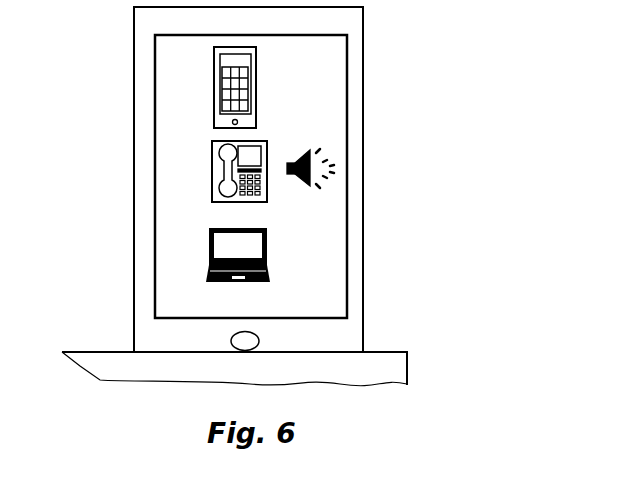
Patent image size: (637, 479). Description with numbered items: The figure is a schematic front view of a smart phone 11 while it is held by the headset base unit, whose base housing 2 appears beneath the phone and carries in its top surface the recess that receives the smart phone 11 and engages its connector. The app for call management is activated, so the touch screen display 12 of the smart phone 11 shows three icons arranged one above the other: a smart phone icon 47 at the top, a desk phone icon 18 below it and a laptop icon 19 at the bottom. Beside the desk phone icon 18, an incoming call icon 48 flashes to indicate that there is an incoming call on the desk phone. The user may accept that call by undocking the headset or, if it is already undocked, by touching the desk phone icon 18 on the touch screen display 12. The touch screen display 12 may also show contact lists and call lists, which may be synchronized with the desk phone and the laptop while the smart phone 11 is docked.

The base housing 2 is at (395, 368).
The smart phone 11 is at (357, 228).
The touch screen display 12 is at (330, 100).
The desk phone icon 18 is at (212, 143).
The laptop icon 19 is at (238, 254).
The smart phone icon 47 is at (214, 57).
The incoming call icon 48 is at (333, 165).